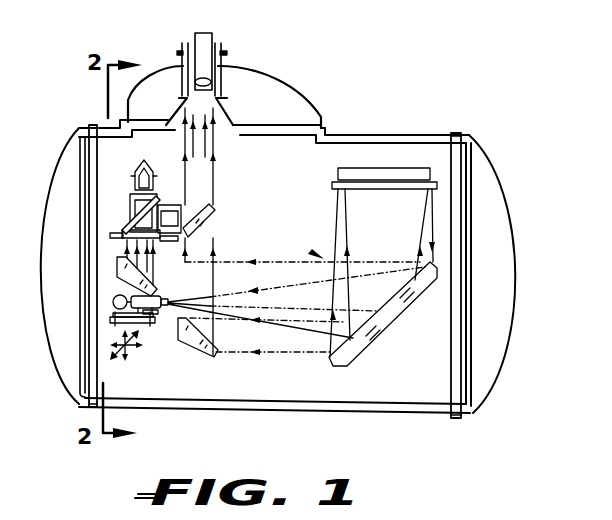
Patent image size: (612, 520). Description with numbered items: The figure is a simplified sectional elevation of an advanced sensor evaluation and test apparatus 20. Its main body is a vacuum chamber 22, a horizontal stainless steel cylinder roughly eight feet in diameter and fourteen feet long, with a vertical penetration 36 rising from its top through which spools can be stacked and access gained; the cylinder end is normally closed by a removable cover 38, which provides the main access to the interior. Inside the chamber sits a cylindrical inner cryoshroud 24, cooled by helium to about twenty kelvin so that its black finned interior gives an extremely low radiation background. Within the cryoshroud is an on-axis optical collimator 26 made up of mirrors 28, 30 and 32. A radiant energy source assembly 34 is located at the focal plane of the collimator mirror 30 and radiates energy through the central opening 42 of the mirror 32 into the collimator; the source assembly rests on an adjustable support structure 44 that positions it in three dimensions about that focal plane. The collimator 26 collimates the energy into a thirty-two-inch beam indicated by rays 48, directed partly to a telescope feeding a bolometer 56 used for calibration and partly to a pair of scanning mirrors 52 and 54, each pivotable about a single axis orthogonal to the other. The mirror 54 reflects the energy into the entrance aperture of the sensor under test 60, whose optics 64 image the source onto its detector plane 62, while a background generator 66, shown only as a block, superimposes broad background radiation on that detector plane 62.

The advanced sensor evaluation and test apparatus 20 is at (430, 89).
The vacuum chamber 22 is at (517, 240).
The inner cryoshroud 24 is at (467, 324).
The on-axis optical collimator 26 is at (318, 255).
The collimator mirror 28 is at (362, 343).
The collimator mirror 30 is at (384, 178).
The collimator mirror 32 is at (216, 356).
The radiant energy source assembly 34 is at (113, 302).
The vertical penetration 36 is at (311, 110).
The removable cover 38 is at (48, 212).
The central opening 42 is at (176, 309).
The support structure 44 is at (112, 316).
The rays 48 is at (115, 256).
The scanning mirror 52 is at (126, 229).
The scanning mirror 54 is at (208, 219).
The bolometer 56 is at (138, 176).
The sensor under test 60 is at (221, 58).
The detector plane 62 is at (214, 35).
The optics 64 is at (199, 78).
The background generator 66 is at (167, 211).